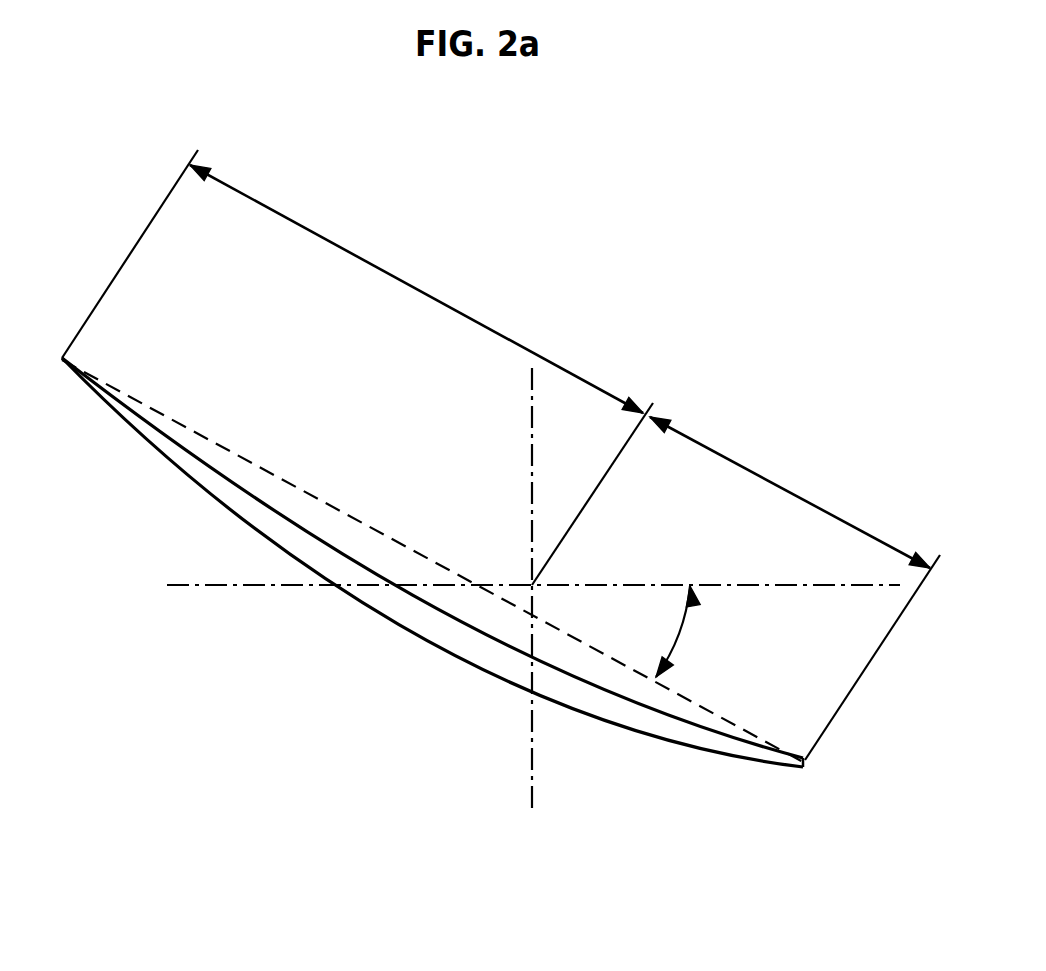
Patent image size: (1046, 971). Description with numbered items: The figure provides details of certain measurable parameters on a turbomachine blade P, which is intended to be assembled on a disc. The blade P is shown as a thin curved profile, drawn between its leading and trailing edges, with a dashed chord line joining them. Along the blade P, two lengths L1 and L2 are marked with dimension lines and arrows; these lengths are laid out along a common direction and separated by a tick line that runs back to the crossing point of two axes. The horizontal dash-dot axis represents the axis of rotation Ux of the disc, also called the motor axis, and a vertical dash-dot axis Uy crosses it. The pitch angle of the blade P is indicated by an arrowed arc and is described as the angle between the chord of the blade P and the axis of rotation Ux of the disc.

The blade P is at (213, 486).
The first chord length portion L1 is at (357, 367).
The second chord length portion L2 is at (795, 588).
The axis of rotation Ux is at (190, 587).
The vertical axis Uy is at (530, 785).